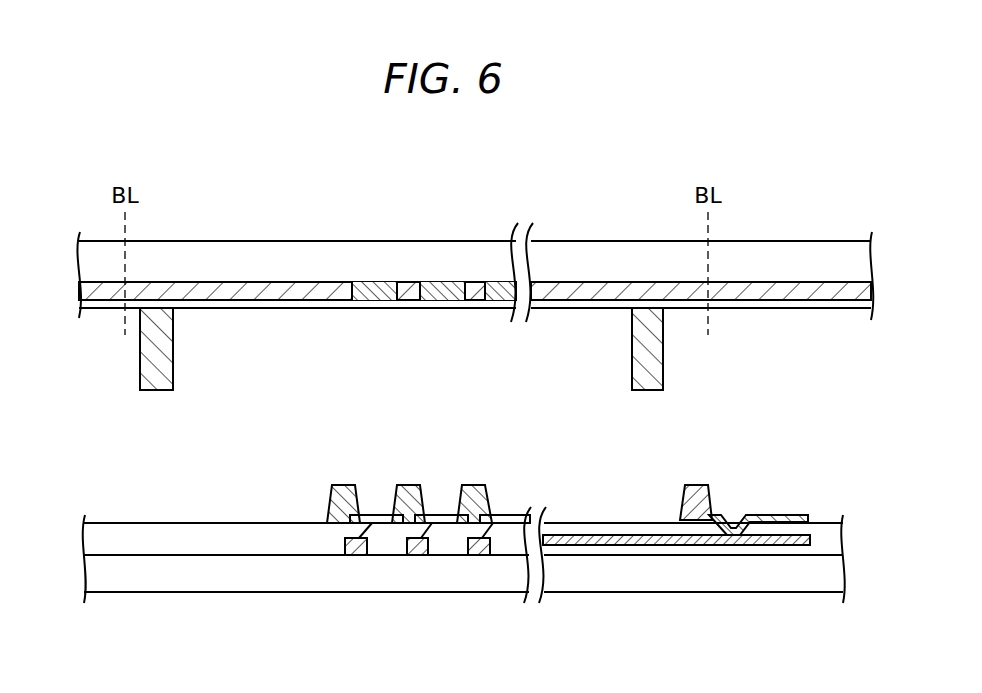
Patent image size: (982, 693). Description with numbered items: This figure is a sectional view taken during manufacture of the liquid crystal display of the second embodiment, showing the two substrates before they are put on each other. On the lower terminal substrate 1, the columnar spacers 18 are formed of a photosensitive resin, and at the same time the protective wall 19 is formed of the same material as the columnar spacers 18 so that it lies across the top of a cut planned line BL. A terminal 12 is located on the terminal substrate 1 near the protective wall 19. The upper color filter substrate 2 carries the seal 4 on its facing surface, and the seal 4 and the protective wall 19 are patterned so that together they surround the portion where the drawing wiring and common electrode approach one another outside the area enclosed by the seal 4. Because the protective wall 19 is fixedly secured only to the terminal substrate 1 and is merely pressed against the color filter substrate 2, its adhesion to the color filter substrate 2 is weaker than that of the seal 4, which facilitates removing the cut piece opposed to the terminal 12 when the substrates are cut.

The terminal substrate 1 is at (70, 517).
The color filter substrate 2 is at (70, 235).
The seal 4 is at (158, 380).
The terminal 12 is at (778, 515).
The columnar spacers 18 is at (352, 483).
The protective wall 19 is at (703, 483).